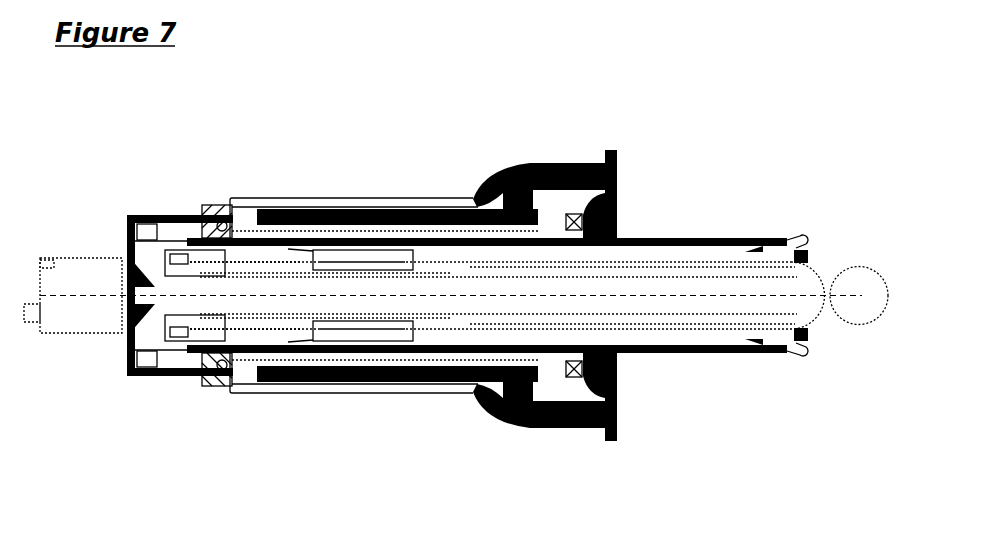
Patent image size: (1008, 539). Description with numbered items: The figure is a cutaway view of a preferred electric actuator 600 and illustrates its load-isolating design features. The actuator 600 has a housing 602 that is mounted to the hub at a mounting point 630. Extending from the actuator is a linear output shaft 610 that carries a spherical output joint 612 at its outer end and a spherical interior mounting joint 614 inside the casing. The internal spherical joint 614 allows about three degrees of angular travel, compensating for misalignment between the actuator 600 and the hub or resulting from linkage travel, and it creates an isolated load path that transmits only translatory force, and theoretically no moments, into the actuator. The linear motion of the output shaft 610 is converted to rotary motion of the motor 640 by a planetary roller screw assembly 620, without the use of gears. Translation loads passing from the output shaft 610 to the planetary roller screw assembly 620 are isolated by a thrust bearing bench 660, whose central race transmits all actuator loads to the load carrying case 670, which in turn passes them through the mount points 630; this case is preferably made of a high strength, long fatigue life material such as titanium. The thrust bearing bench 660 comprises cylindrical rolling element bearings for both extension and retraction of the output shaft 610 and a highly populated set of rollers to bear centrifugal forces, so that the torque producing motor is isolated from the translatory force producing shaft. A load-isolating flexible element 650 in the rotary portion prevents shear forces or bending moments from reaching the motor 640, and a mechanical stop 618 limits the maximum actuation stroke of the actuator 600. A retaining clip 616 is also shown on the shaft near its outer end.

The actuator 600 is at (238, 172).
The housing 602 is at (296, 197).
The linear output shaft 610 is at (840, 328).
The spherical output joint 612 is at (855, 292).
The spherical interior mounting joint 614 is at (428, 330).
The retaining clip 616 is at (797, 237).
The mechanical stop 618 is at (750, 340).
The planetary roller screw assembly 620 is at (367, 270).
The mounting point 630 is at (615, 178).
The motor 640 is at (445, 208).
The load-isolating flexible element 650 is at (135, 345).
The thrust bearing bench 660 is at (215, 333).
The load carrying case 670 is at (610, 392).